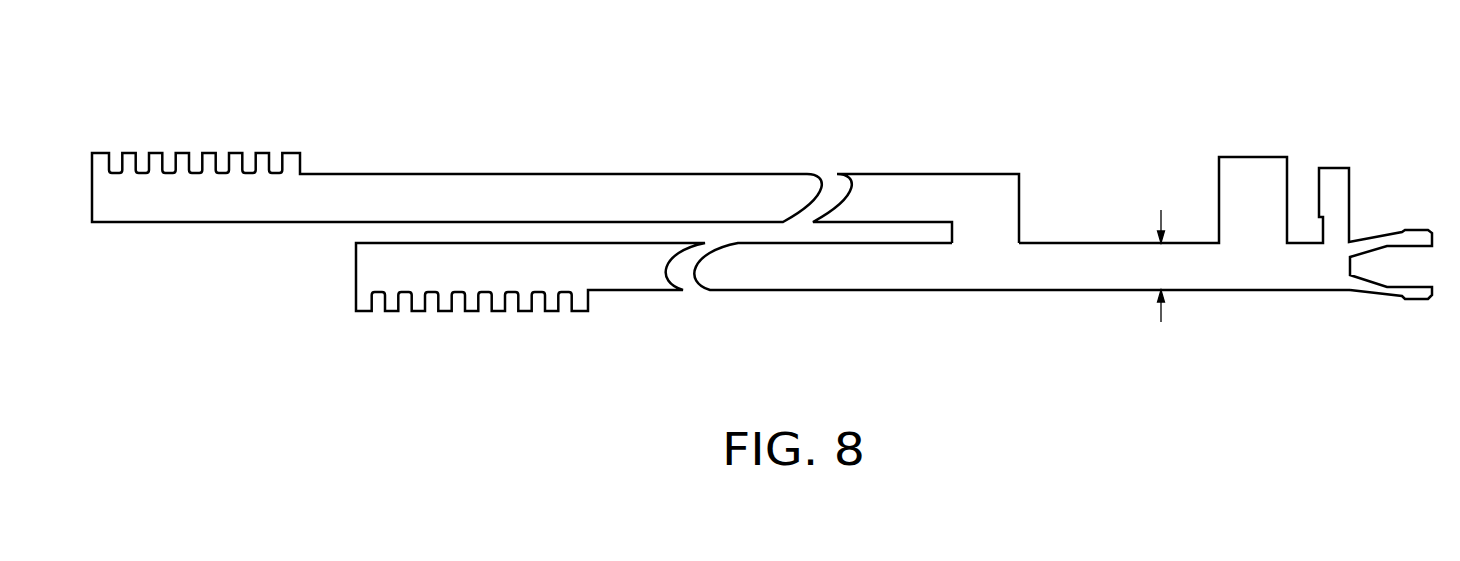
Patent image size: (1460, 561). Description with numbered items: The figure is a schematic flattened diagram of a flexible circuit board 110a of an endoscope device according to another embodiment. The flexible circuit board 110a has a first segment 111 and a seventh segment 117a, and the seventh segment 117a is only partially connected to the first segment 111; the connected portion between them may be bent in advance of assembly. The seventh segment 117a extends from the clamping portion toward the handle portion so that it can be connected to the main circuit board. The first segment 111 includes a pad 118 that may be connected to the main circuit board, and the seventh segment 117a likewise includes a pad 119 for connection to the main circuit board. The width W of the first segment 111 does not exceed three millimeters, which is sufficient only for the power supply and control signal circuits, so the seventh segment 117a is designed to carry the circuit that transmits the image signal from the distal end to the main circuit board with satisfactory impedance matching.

The flexible circuit board 110a is at (1352, 88).
The first segment 111 is at (857, 273).
The seventh segment 117a is at (883, 182).
The pad 118 is at (459, 300).
The pad 119 is at (222, 160).